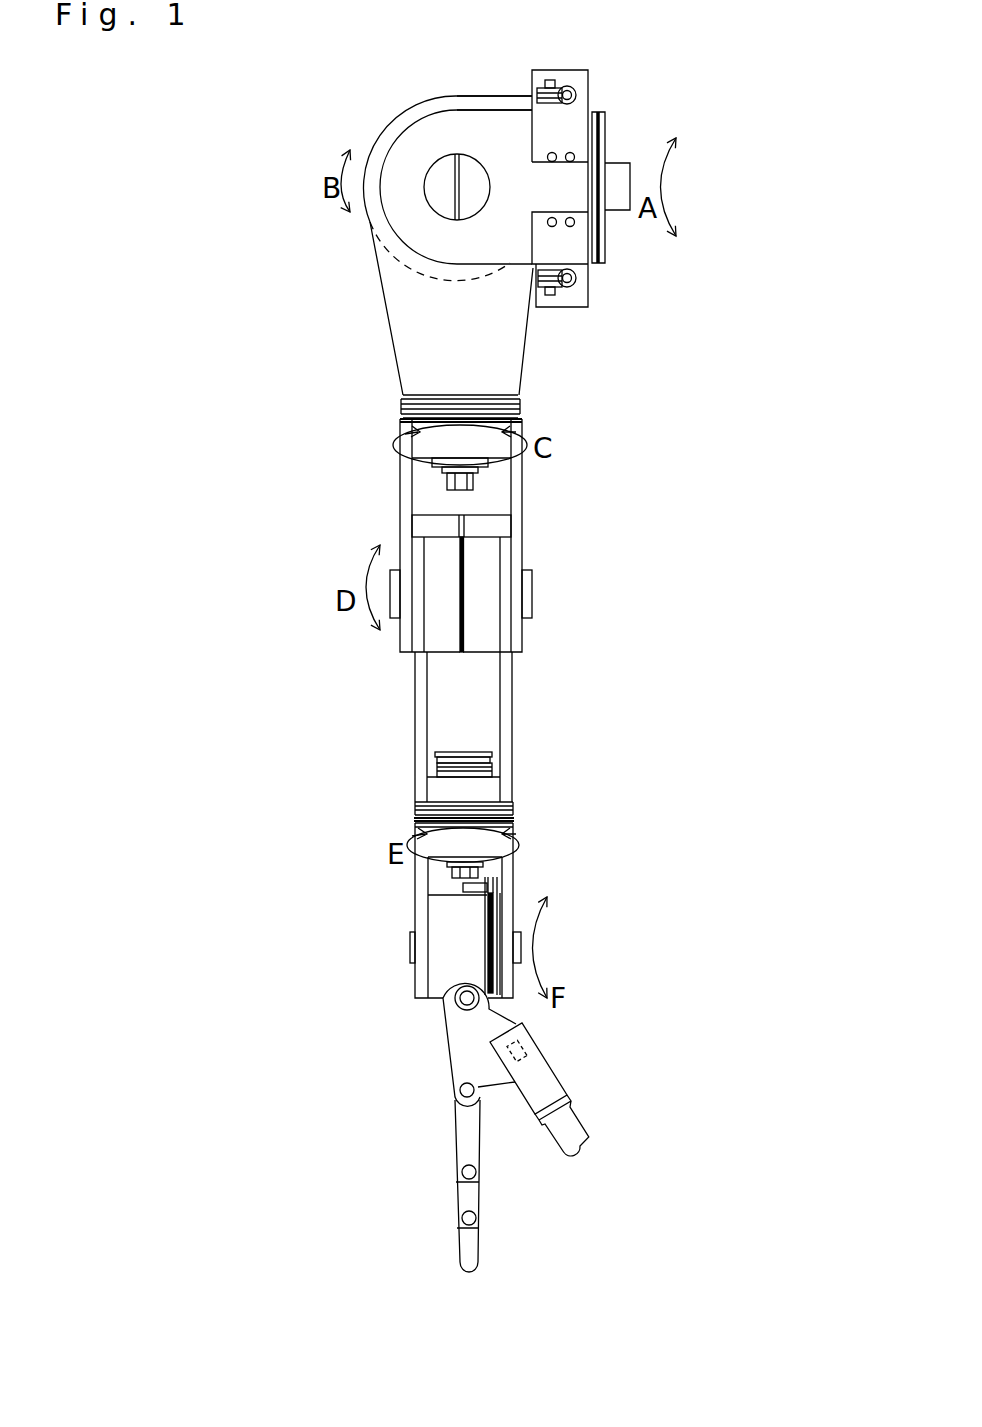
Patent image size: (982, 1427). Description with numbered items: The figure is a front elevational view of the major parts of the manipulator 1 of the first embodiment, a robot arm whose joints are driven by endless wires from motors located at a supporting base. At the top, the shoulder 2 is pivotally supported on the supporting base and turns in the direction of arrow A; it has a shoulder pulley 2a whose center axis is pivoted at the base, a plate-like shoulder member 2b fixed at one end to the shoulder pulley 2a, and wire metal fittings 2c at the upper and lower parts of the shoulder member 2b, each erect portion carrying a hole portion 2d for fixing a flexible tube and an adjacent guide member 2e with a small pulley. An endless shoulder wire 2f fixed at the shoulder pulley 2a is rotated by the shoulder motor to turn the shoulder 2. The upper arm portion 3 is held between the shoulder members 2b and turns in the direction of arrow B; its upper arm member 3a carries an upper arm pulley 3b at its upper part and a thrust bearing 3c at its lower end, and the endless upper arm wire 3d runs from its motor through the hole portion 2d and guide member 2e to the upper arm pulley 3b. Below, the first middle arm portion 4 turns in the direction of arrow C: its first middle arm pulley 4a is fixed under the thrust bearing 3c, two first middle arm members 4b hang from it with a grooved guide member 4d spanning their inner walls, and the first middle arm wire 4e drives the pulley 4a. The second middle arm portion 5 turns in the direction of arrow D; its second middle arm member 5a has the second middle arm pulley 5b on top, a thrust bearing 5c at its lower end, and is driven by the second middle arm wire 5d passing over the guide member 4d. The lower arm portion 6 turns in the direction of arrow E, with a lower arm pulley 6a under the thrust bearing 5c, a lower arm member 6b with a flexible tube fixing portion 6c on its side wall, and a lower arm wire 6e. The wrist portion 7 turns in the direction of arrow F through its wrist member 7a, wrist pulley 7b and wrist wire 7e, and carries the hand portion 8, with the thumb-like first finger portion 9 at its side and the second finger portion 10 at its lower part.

The manipulator 1 is at (277, 223).
The shoulder 2 is at (668, 112).
The shoulder pulley 2a is at (607, 143).
The shoulder member 2b is at (425, 135).
The wire metal fitting 2c is at (576, 86).
The hole portion for fixing a flexible tube 2d is at (577, 97).
The guide member 2e is at (551, 296).
The shoulder wire 2f is at (596, 240).
The upper arm portion 3 is at (352, 302).
The upper arm member 3a is at (423, 343).
The upper arm pulley 3b is at (395, 258).
The thrust bearing 3c is at (420, 399).
The upper arm wire 3d is at (500, 96).
The first middle arm portion 4 is at (580, 447).
The first middle arm pulley 4a is at (518, 411).
The first middle arm member 4b is at (518, 492).
The guide member 4d is at (488, 525).
The first middle arm wire 4e is at (425, 425).
The second middle arm portion 5 is at (555, 736).
The second middle arm member 5a is at (508, 700).
The second middle arm pulley 5b is at (485, 612).
The thrust bearing 5c is at (512, 812).
The second middle arm wire 5d is at (458, 628).
The lower arm portion 6 is at (345, 838).
The lower arm pulley 6a is at (515, 826).
The lower arm member 6b is at (510, 872).
The flexible tube fixing portion 6c is at (470, 888).
The lower arm wire 6e is at (420, 819).
The wrist portion 7 is at (352, 952).
The wrist member 7a is at (422, 976).
The wrist pulley 7b is at (483, 920).
The wrist wire 7e is at (494, 950).
The hand portion 8 is at (450, 1068).
The first finger portion 9 is at (560, 1080).
The second finger portion 10 is at (456, 1200).